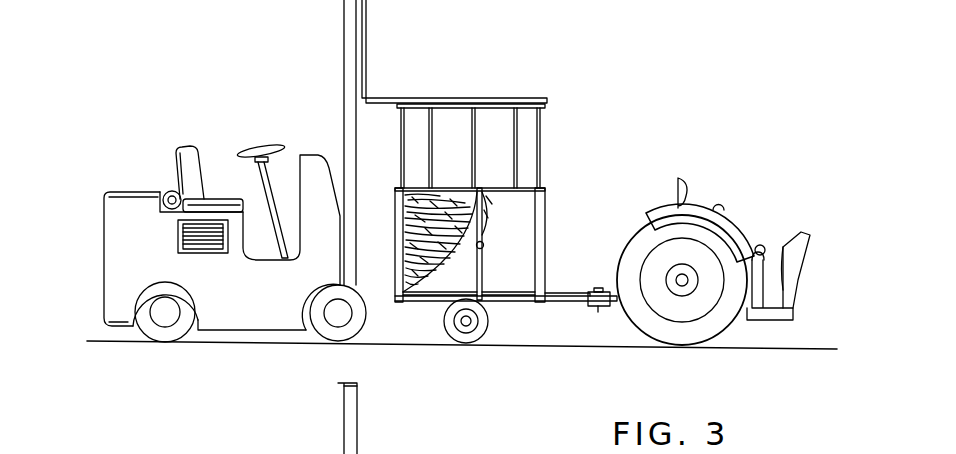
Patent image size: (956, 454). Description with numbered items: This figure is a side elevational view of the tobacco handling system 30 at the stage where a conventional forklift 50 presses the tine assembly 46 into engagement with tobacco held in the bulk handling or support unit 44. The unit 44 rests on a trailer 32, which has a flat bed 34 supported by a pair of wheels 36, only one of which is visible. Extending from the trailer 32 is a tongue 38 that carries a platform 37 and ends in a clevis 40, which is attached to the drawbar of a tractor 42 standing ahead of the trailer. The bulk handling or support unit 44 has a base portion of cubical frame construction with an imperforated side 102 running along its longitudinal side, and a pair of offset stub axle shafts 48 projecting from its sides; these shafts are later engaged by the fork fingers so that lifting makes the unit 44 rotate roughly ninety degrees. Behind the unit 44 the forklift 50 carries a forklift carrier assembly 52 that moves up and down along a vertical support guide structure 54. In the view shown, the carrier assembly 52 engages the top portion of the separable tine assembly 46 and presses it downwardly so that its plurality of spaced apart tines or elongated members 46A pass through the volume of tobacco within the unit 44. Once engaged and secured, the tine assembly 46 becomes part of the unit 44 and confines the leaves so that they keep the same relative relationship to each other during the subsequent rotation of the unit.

The bale handling apparatus 30 is at (345, 452).
The trailer 32 is at (566, 322).
The flat bed 34 is at (527, 301).
The wheels 36 is at (447, 323).
The platform 37 is at (560, 302).
The tongue 38 is at (548, 302).
The clevis 40 is at (600, 290).
The tractor 42 is at (784, 229).
The bulk handling or support unit 44 is at (568, 203).
The tine assembly 46 is at (548, 102).
The tines or elongated members 46A is at (430, 158).
The stub axle shafts 48 is at (482, 246).
The forklift 50 is at (147, 184).
The forklift carrier assembly 52 is at (366, 45).
The vertical support guide structure 54 is at (345, 25).
The imperforated side 102 is at (440, 281).